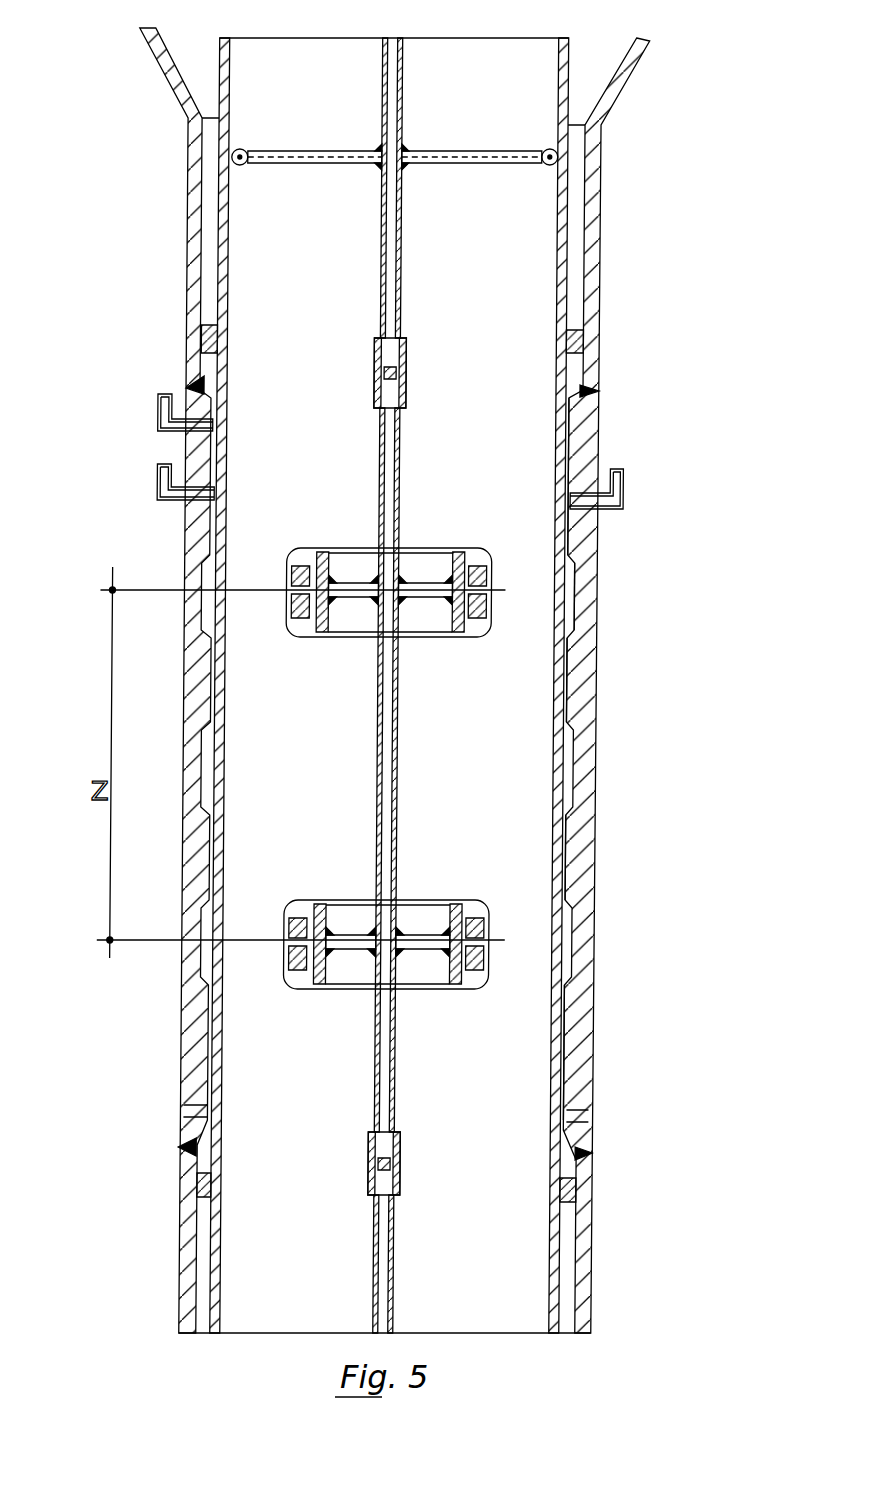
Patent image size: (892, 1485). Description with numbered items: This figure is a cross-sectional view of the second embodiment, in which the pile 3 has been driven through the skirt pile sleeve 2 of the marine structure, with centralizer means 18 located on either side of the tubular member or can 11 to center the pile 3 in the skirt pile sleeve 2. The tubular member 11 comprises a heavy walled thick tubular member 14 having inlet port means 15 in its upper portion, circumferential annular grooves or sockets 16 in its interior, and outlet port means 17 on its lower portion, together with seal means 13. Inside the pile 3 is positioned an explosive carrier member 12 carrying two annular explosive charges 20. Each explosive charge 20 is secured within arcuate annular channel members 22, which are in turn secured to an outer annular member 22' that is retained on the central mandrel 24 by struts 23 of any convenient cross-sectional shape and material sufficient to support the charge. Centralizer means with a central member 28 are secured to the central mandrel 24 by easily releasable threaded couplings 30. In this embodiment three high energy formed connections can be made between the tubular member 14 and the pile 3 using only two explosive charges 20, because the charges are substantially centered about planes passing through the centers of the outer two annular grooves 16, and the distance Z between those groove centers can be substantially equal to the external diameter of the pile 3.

The skirt pile sleeve 2 is at (190, 180).
The pile 3 is at (222, 232).
The tubular member or can 11 is at (609, 523).
The explosive carrier member 12 is at (422, 500).
The seal means 13 is at (574, 452).
The thick tubular member 14 is at (585, 543).
The inlet port means 15 is at (610, 497).
The circumferential annular groove or socket 16 is at (581, 597).
The outlet port means 17 is at (584, 1115).
The centralizer means 18 is at (208, 340).
The annular explosive charge 20 is at (486, 616).
The arcuate annular channel member 22 is at (425, 755).
The outer annular member 22' is at (401, 737).
The strut 23 is at (412, 605).
The central mandrel 24 is at (403, 458).
The central member 28 is at (403, 236).
The threaded coupling 30 is at (410, 362).